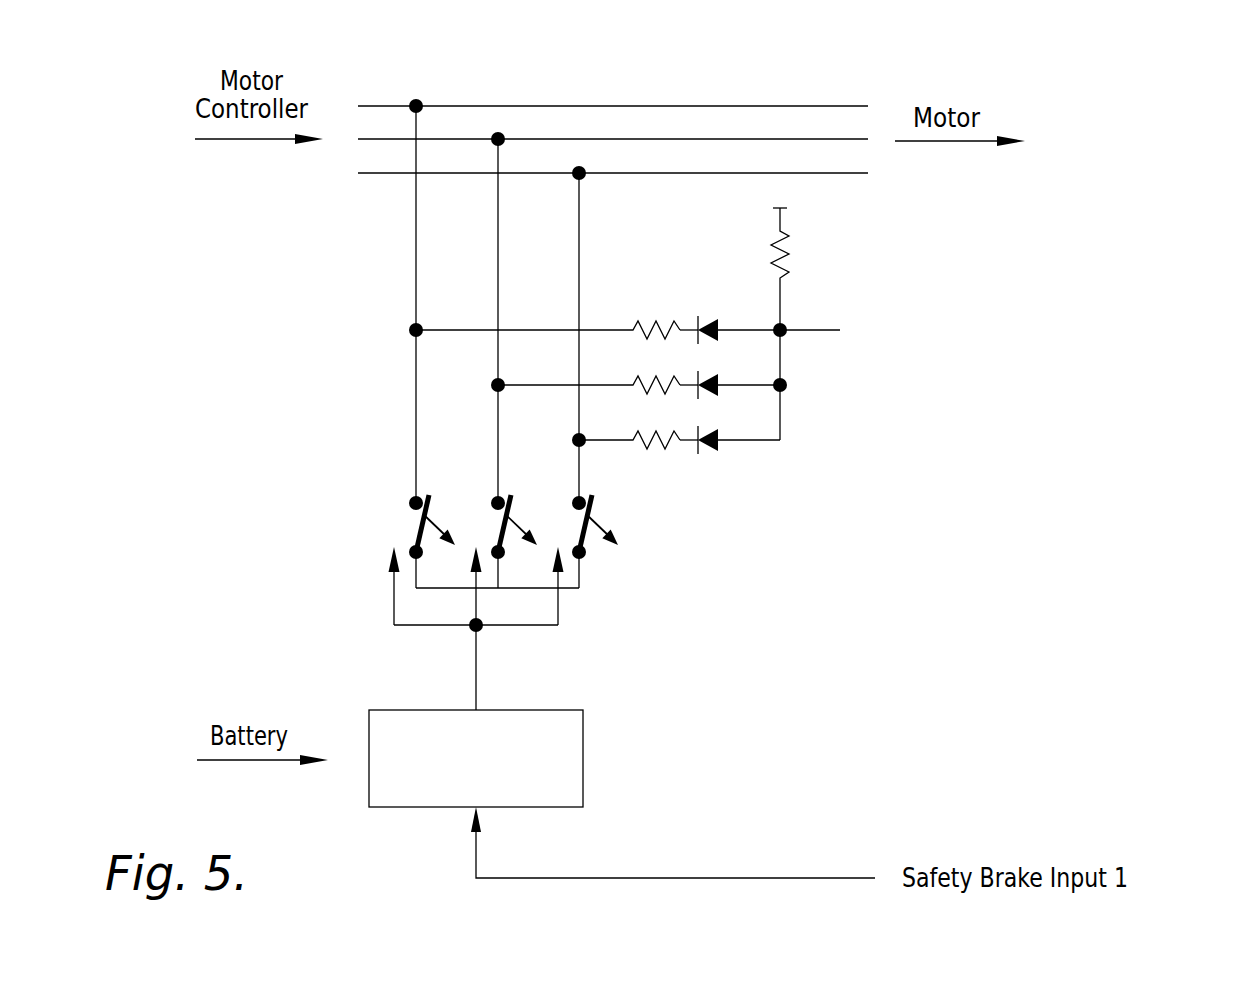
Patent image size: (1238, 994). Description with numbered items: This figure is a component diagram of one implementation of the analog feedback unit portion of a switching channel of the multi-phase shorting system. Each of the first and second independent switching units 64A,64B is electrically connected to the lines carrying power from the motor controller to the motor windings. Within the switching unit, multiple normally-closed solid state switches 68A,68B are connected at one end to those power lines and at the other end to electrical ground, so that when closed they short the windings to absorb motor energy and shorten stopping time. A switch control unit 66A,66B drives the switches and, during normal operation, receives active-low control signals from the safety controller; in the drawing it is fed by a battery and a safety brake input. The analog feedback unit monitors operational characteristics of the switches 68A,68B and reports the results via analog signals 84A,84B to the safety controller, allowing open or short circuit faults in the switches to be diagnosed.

The first and second independent switching units 64A,64B is at (806, 78).
The analog signals 84A,84B is at (1043, 268).
The normally-closed solid state switches 68A,68B is at (655, 548).
The switch control unit 66A,66B is at (603, 726).